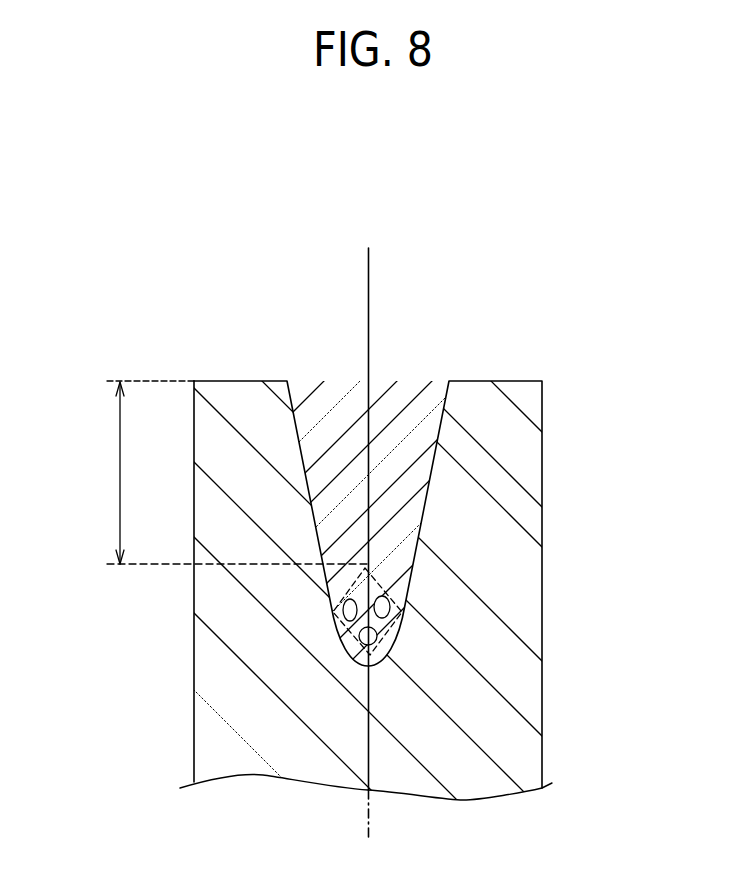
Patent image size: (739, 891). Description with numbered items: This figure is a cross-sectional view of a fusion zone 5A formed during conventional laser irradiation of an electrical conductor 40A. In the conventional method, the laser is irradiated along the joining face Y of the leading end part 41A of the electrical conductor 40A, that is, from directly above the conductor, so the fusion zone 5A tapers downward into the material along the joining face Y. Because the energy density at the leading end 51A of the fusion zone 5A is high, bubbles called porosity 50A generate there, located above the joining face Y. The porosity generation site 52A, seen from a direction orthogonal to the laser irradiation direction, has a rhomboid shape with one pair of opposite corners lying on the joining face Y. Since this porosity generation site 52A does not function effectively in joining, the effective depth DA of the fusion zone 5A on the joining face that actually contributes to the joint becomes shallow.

The electrical conductor 40A is at (340, 445).
The leading end part 41A is at (500, 388).
The fusion zone 5A is at (333, 380).
The porosity 50A is at (385, 608).
The leading end 51A is at (372, 663).
The porosity generation site 52A is at (393, 625).
The joining face Y is at (370, 273).
The effective depth DA is at (223, 472).